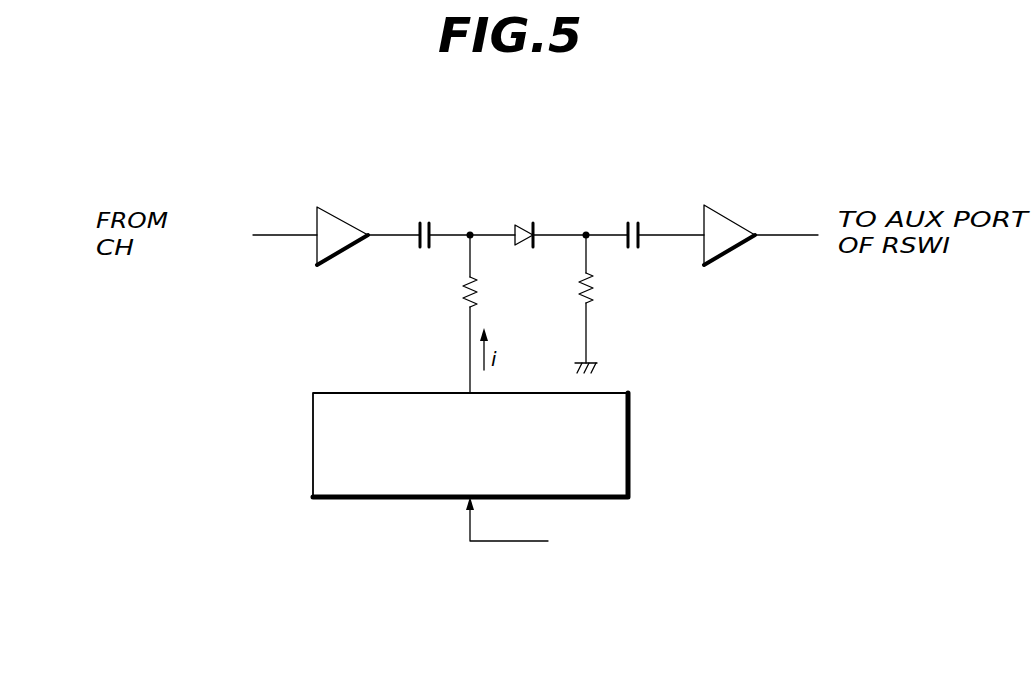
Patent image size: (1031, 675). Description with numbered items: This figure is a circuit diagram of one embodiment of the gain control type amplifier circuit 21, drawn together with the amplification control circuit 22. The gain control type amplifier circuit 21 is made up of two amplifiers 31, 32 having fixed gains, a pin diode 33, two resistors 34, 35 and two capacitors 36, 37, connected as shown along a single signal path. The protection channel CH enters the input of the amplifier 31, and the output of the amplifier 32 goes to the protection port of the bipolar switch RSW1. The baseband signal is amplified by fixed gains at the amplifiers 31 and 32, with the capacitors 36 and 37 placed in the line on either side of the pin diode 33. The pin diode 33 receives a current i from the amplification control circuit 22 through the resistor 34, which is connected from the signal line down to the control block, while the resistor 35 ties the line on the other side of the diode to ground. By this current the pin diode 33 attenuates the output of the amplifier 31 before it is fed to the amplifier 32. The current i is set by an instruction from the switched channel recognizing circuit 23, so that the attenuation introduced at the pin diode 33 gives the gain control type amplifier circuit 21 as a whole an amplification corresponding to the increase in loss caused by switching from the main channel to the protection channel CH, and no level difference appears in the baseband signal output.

The gain control type amplifier circuit 21 is at (606, 160).
The amplification control circuit 22 is at (631, 462).
The switched channel recognizing circuit 23 is at (693, 534).
The amplifier 31 is at (337, 212).
The amplifier 32 is at (730, 215).
The pin diode 33 is at (533, 217).
The resistor 34 is at (460, 298).
The resistor 35 is at (594, 300).
The capacitor 36 is at (424, 222).
The capacitor 37 is at (634, 221).